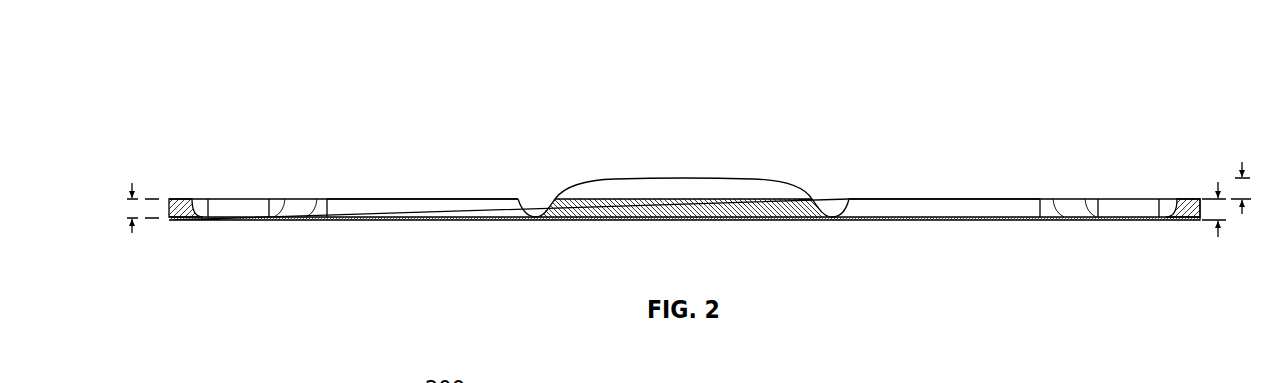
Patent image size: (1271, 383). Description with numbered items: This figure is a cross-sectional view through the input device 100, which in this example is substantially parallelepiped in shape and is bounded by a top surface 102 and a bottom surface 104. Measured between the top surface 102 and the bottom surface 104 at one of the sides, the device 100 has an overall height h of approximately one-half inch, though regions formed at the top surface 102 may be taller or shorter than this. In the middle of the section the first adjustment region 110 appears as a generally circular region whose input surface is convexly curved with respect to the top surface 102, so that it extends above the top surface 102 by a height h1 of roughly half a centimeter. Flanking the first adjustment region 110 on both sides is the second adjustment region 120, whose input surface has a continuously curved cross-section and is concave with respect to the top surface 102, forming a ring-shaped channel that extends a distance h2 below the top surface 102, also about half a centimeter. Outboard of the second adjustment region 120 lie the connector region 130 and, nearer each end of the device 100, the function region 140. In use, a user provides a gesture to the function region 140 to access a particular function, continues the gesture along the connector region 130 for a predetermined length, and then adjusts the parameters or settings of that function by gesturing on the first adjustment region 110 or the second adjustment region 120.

The input device 100 is at (229, 62).
The top surface 102 is at (181, 197).
The bottom surface 104 is at (181, 222).
The first adjustment region 110 is at (686, 184).
The second adjustment region 120 is at (533, 203).
The connector region 130 is at (430, 204).
The function region 140 is at (242, 205).
The height h is at (1217, 232).
The height h1 is at (1240, 163).
The height h2 is at (134, 182).